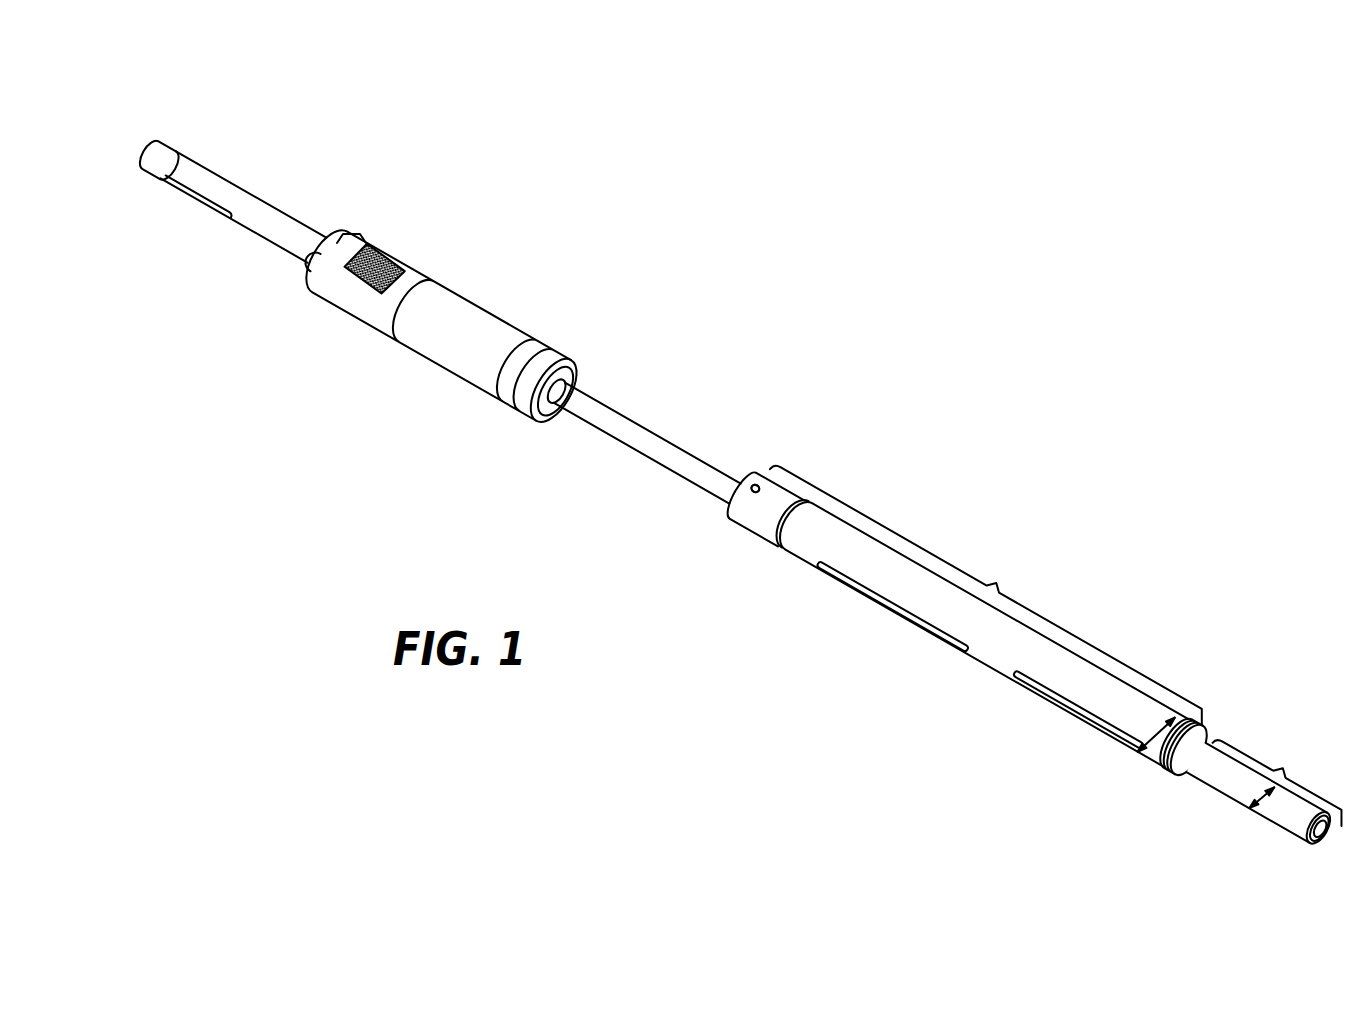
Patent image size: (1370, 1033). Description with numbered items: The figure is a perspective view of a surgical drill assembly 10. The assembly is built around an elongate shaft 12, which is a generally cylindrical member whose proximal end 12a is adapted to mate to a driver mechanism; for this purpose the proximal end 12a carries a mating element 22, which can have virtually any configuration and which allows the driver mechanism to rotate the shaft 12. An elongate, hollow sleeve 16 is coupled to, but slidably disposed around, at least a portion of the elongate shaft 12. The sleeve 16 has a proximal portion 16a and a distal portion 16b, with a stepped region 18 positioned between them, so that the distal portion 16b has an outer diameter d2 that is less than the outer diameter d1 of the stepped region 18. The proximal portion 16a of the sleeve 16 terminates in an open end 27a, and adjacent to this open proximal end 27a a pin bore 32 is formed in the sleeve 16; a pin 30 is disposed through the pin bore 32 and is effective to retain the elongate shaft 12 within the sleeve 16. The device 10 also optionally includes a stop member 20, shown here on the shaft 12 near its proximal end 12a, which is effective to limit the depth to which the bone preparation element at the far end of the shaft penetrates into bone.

The surgical drill assembly 10 is at (976, 310).
The elongate shaft 12 is at (668, 434).
The proximal end 12a is at (243, 131).
The hollow sleeve 16 is at (1003, 649).
The proximal portion 16a is at (989, 591).
The distal portion 16b is at (1269, 790).
The stepped region 18 is at (1182, 772).
The stop member 20 is at (474, 340).
The mating element 22 is at (171, 154).
The open end 27a is at (728, 508).
The pin 30 is at (751, 479).
The pin bore 32 is at (755, 488).
The outer diameter of the stepped region d1 is at (1152, 739).
The outer diameter of the distal portion d2 is at (1259, 800).